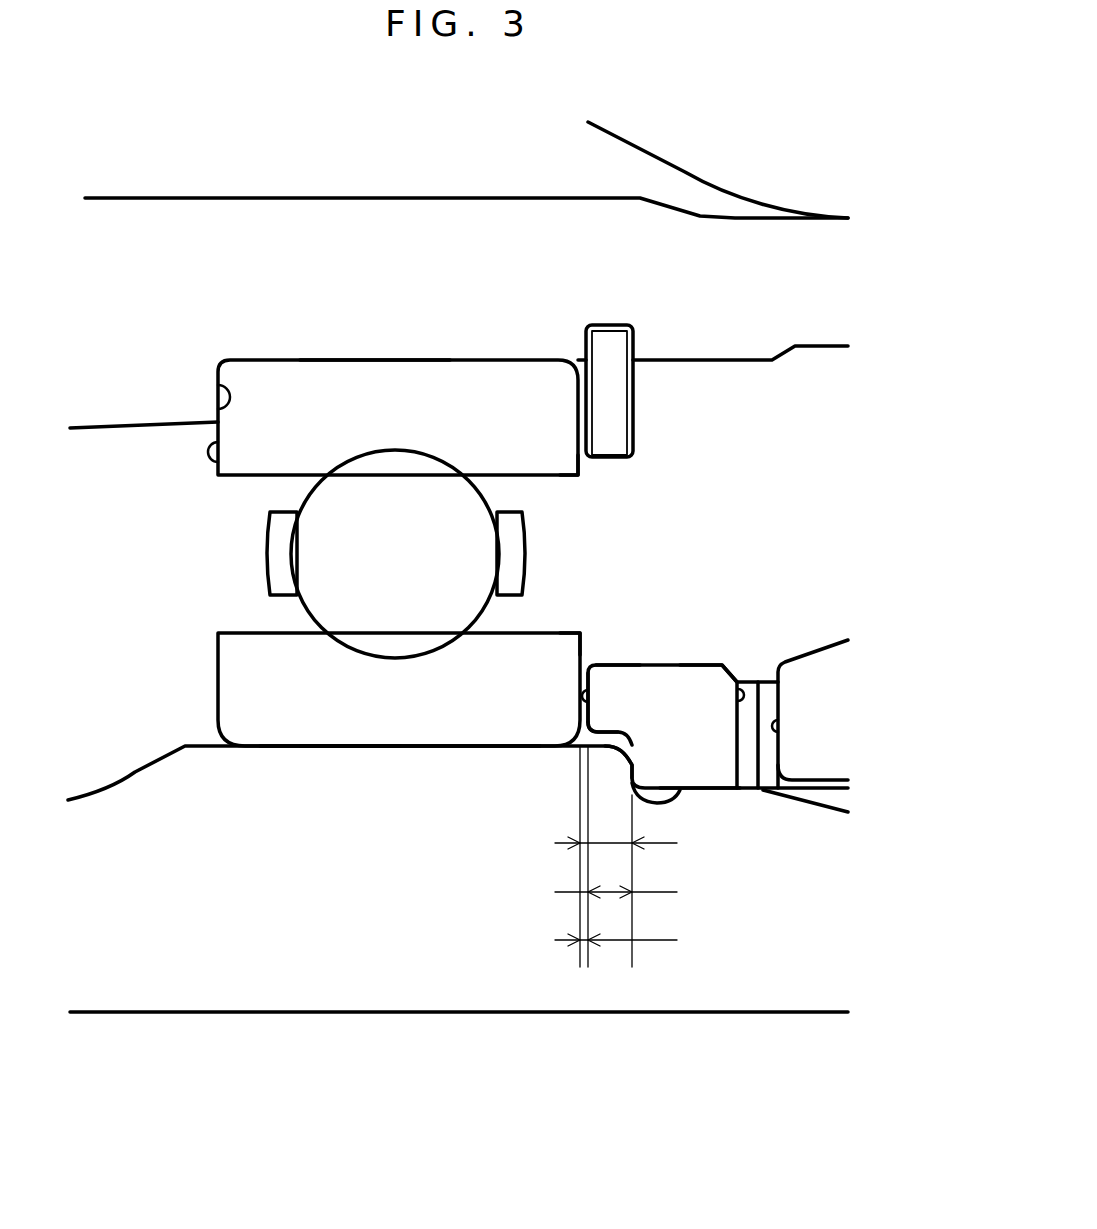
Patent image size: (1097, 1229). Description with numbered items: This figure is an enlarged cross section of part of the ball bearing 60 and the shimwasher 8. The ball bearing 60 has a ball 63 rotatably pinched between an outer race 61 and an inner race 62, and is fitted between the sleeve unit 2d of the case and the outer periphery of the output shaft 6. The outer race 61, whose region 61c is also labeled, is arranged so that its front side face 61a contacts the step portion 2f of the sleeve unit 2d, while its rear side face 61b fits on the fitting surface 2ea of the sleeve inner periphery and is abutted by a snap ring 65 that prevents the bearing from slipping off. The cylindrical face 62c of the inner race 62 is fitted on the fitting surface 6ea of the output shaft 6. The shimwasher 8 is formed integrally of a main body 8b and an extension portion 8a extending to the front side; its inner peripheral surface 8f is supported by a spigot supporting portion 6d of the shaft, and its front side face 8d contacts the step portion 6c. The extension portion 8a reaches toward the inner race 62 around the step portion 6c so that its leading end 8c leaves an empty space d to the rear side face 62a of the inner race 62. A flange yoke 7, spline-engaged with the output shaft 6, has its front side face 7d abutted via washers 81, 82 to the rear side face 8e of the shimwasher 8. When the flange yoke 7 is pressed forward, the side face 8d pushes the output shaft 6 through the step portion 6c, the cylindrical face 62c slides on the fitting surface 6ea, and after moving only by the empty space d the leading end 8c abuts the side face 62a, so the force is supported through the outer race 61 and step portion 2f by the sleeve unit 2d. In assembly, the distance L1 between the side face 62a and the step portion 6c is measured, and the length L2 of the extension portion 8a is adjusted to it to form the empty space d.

The ball bearing 60 is at (414, 310).
The outer race 61 is at (320, 372).
The side face of the front side of the outer race 61a is at (225, 462).
The side face of the rear side of the outer race 61b is at (582, 462).
The outer ring outer peripheral surface 61c is at (376, 358).
The inner race 62 is at (228, 672).
The side face of the rear side of the inner race 62a is at (582, 643).
The cylindrical face 62c is at (438, 749).
The ball 63 is at (310, 598).
The snap ring 65 is at (618, 400).
The sleeve unit 2d is at (135, 408).
The step portion 2f is at (222, 372).
The fitting surface 2ea is at (460, 362).
The output shaft 6 is at (348, 998).
The fitting surface 6ea is at (300, 746).
The step portion 6c is at (640, 770).
The spigot supporting portion 6d is at (693, 787).
The flange yoke 7 is at (834, 652).
The side face of the front side of the flange yoke 7d is at (781, 740).
The shimwasher 8 is at (661, 667).
The extension portion 8a is at (610, 668).
The main body 8b is at (700, 668).
The leading end 8c is at (580, 695).
The side face of the front side 8d is at (603, 735).
The side face 8e is at (737, 690).
The inner peripheral surface 8f is at (675, 795).
The washer 81 is at (748, 685).
The washer 82 is at (770, 685).
The distance L1 is at (610, 843).
The length L2 is at (612, 892).
The empty space d is at (585, 940).